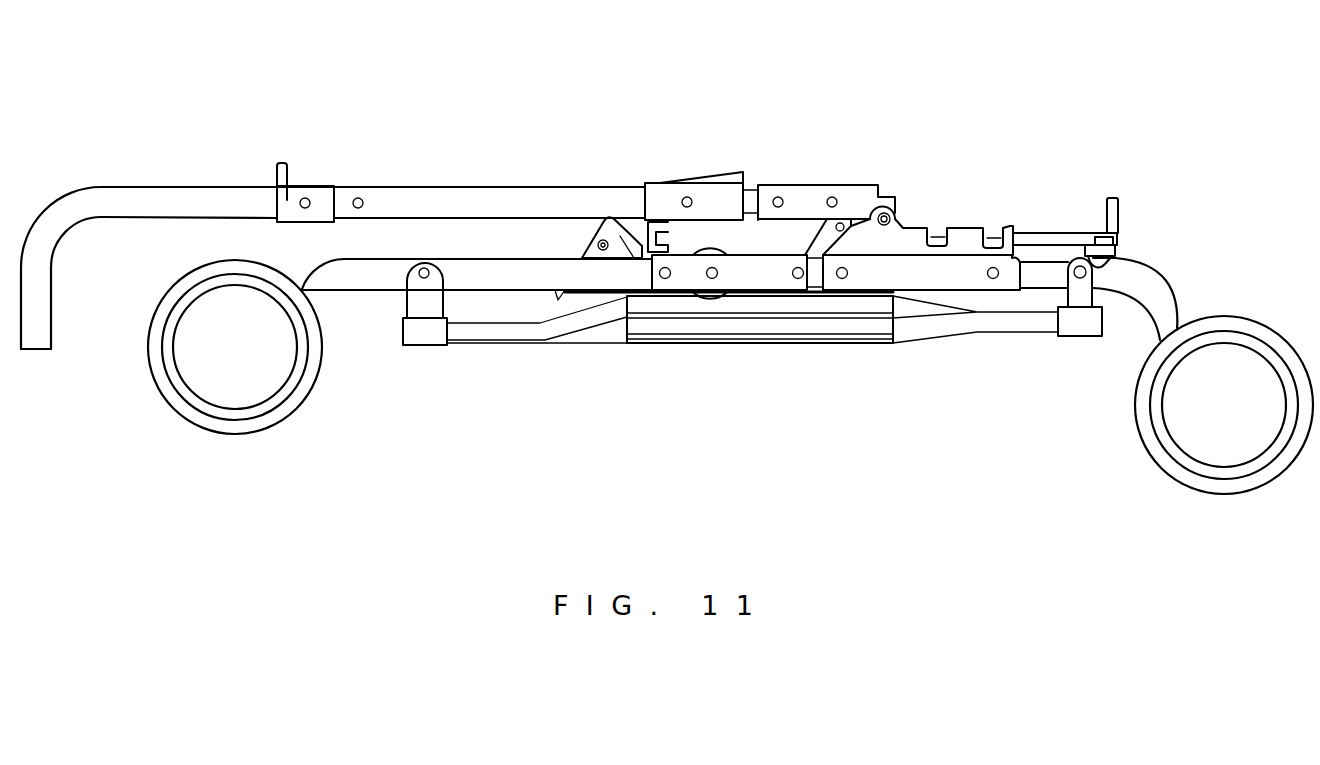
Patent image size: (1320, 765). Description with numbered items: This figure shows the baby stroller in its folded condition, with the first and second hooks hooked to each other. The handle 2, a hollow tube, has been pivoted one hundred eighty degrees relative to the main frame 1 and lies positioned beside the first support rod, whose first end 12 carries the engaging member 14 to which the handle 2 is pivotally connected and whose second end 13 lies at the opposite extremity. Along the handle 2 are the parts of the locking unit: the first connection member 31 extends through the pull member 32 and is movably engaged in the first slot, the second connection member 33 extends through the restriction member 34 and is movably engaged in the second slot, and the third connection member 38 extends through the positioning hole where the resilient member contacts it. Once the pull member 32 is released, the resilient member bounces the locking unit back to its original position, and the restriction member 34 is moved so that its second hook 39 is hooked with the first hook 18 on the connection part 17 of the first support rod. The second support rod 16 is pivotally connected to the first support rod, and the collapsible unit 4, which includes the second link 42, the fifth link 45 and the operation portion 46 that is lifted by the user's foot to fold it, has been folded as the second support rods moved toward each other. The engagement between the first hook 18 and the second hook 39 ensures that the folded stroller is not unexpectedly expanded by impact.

The main frame 1 is at (608, 222).
The handle 2 is at (432, 195).
The collapsible unit 4 is at (1162, 171).
The first end 12 is at (818, 270).
The second end 13 is at (323, 273).
The engaging member 14 is at (960, 270).
The second support rod 16 is at (1043, 277).
The connection part 17 is at (764, 278).
The first hook 18 is at (668, 227).
The first connection member 31 is at (298, 197).
The pull member 32 is at (321, 192).
The second connection member 33 is at (686, 193).
The restriction member 34 is at (735, 180).
The third connection member 38 is at (360, 197).
The second hook 39 is at (643, 222).
The second link 42 is at (1172, 244).
The fifth link 45 is at (1060, 232).
The operation portion 46 is at (1120, 206).